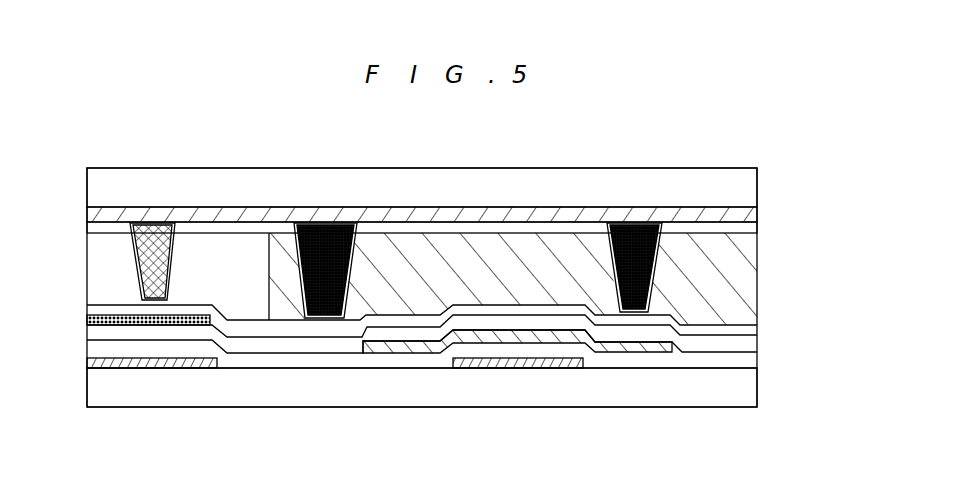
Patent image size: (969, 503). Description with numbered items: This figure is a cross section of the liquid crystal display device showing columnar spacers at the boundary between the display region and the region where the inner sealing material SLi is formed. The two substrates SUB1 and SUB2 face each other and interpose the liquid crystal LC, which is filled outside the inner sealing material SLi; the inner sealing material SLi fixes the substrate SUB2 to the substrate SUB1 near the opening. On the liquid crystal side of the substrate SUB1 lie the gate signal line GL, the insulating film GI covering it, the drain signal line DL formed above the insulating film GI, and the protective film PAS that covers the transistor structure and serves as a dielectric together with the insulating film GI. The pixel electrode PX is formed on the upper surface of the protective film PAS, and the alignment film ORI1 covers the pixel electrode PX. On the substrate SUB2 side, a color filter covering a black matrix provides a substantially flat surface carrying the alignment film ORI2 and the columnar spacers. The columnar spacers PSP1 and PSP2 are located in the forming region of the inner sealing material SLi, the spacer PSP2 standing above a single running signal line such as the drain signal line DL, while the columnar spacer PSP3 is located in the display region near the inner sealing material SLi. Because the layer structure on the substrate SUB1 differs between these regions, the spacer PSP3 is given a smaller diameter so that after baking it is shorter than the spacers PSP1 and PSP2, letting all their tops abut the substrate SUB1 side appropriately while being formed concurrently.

The substrate SUB2 is at (757, 184).
The alignment film ORI2 is at (757, 230).
The inner sealing material SLi is at (500, 248).
The liquid crystal LC is at (237, 258).
The alignment film ORI1 is at (757, 326).
The protective film PAS is at (757, 345).
The drain signal line DL is at (401, 353).
The insulating film GI is at (757, 365).
The gate signal line GL is at (145, 368).
The substrate SUB1 is at (757, 392).
The pixel electrode PX is at (87, 316).
The columnar spacer PSP3 is at (148, 223).
The columnar spacer PSP1 is at (318, 224).
The columnar spacer PSP2 is at (629, 223).